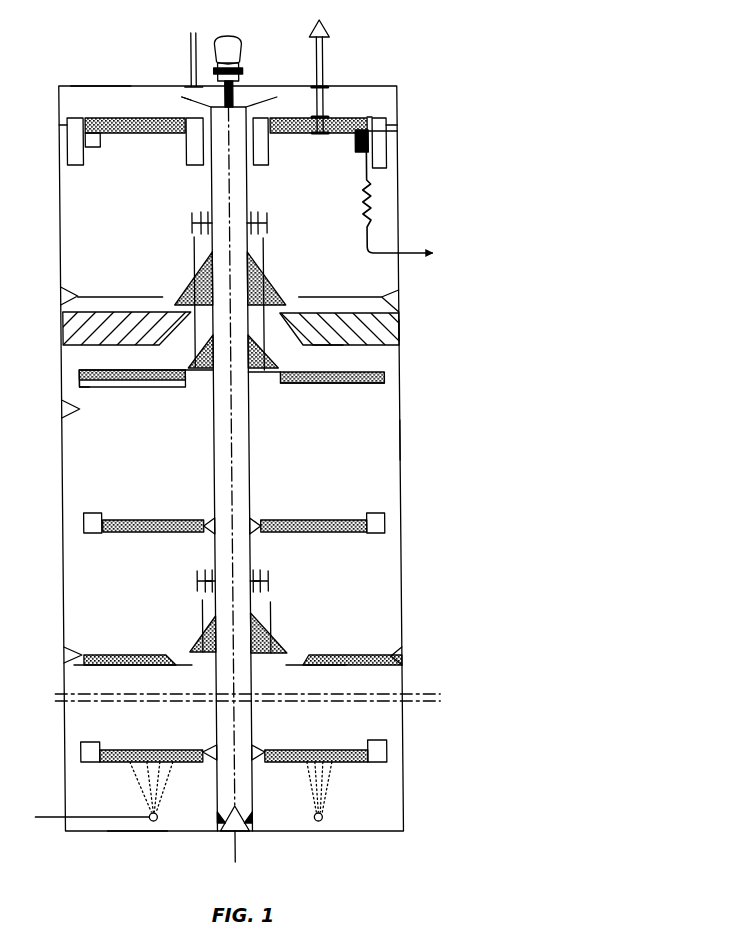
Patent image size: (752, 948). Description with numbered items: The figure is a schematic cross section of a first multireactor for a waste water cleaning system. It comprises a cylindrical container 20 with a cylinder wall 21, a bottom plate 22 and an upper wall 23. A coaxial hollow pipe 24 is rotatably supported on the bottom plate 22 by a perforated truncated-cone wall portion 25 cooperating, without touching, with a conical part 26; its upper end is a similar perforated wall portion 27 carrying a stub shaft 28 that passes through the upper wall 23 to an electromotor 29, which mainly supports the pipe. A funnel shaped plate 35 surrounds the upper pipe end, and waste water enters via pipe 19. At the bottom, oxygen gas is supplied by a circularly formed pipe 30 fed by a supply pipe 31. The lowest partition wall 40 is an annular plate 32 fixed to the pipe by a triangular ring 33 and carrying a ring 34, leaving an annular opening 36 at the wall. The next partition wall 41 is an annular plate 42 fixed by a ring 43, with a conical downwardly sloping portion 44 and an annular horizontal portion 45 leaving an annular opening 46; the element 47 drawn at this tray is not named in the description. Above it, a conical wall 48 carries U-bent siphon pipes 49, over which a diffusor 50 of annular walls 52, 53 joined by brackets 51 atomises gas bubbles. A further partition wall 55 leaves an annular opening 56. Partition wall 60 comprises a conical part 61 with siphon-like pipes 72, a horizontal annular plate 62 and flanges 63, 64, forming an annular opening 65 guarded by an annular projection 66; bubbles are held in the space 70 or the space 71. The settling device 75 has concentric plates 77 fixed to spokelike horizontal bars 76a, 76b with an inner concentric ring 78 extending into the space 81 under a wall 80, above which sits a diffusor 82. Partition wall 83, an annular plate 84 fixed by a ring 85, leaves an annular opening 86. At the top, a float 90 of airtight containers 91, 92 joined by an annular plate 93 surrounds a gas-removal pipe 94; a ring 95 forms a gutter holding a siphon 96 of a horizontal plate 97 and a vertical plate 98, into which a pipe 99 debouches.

The pipe 19 is at (196, 35).
The cylindrical container 20 is at (400, 372).
The cylinder wall 21 is at (398, 442).
The bottom plate 22 is at (120, 832).
The upper wall 23 is at (92, 86).
The hollow pipe 24 is at (246, 462).
The wall portion 25 is at (246, 820).
The conical part 26 is at (232, 840).
The wall portion 27 is at (246, 102).
The stub shaft 28 is at (238, 74).
The electromotor 29 is at (240, 45).
The circularly formed pipe 30 is at (152, 816).
The supply pipe 31 is at (72, 817).
The annular plate 32 is at (140, 750).
The ring 33 is at (256, 748).
The ring 34 is at (88, 745).
The funnel shaped plate 35 is at (186, 99).
The annular opening 36 is at (382, 752).
The partition wall 40 is at (315, 750).
The partition wall 41 is at (100, 654).
The annular plate 42 is at (330, 654).
The ring 43 is at (396, 656).
The conical downwardly sloping portion 44 is at (318, 667).
The annular horizontal portion 45 is at (282, 667).
The annular opening 46 is at (186, 667).
The catalyst tray 47 is at (122, 666).
The conical wall 48 is at (275, 638).
The pipes 49 is at (196, 610).
The diffusor 50 is at (272, 580).
The brackets 51 is at (268, 577).
The annular wall 52 is at (195, 584).
The annular wall 53 is at (190, 575).
The partition wall 55 is at (160, 520).
The annular opening 56 is at (68, 520).
The partition wall 60 is at (146, 380).
The conical part 61 is at (276, 384).
The horizontal annular plate 62 is at (316, 384).
The flange 63 is at (180, 384).
The flange 64 is at (84, 386).
The annular opening 65 is at (384, 378).
The annular projection 66 is at (68, 415).
The space 70 is at (256, 384).
The space 71 is at (342, 384).
The siphon-like pipes 72 is at (262, 248).
The settling device 75 is at (94, 312).
The spokelike horizontal bars 76a is at (326, 346).
The spokelike horizontal bars 76b is at (395, 340).
The concentric plates 77 is at (322, 314).
The inner concentric ring 78 is at (190, 340).
The wall 80 is at (280, 294).
The space 81 is at (268, 275).
The diffusor 82 is at (268, 222).
The partition wall 83 is at (128, 296).
The annular plate 84 is at (148, 296).
The ring 85 is at (64, 288).
The annular opening 86 is at (168, 298).
The float 90 is at (158, 136).
The annular airtight container 91 is at (80, 160).
The annular airtight container 92 is at (192, 165).
The annular plate 93 is at (100, 118).
The pipe 94 is at (322, 62).
The ring 95 is at (100, 143).
The siphon 96 is at (390, 131).
The horizontal plate 97 is at (380, 118).
The vertical plate 98 is at (355, 142).
The pipe 99 is at (368, 205).